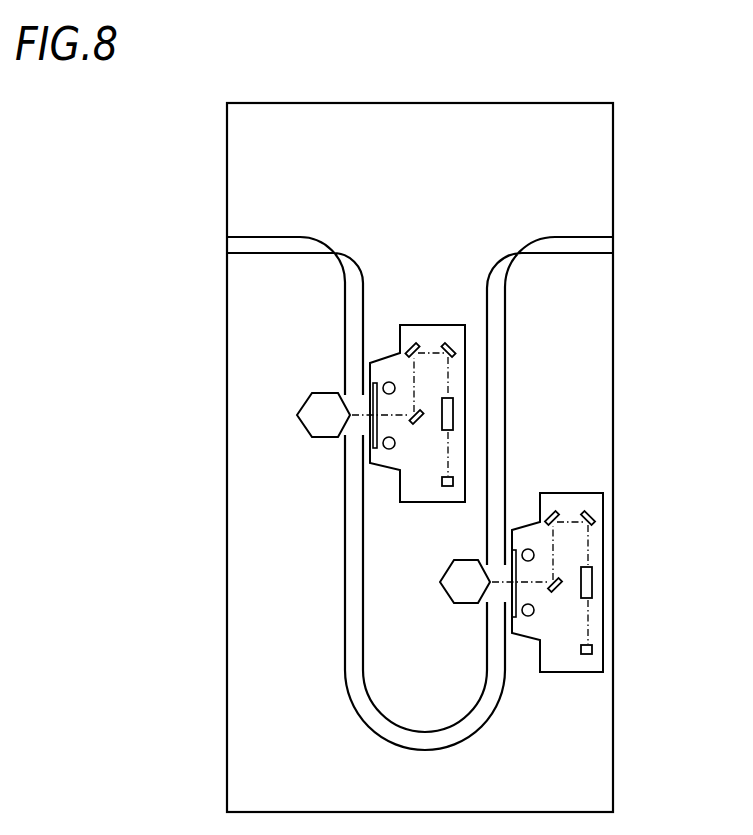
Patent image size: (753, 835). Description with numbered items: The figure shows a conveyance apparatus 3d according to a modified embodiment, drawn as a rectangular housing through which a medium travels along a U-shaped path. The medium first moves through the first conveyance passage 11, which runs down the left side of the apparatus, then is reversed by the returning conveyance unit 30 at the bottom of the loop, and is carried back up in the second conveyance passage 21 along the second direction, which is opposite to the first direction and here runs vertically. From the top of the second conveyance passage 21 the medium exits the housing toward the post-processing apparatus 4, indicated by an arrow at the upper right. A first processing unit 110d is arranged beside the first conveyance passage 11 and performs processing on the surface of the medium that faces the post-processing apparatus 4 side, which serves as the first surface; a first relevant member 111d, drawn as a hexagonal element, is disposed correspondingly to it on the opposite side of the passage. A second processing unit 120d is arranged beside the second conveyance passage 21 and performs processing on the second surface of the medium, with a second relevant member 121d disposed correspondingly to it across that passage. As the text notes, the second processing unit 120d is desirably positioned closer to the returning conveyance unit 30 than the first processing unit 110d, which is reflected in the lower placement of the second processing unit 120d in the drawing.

The conveyance apparatus 3d is at (278, 139).
The post-processing apparatus 4 is at (595, 245).
The first conveyance passage 11 is at (351, 360).
The second conveyance passage 21 is at (501, 435).
The returning conveyance unit 30 is at (350, 734).
The first processing unit 110d is at (432, 302).
The first relevant member 111d is at (316, 438).
The second processing unit 120d is at (592, 493).
The second relevant member 121d is at (460, 560).